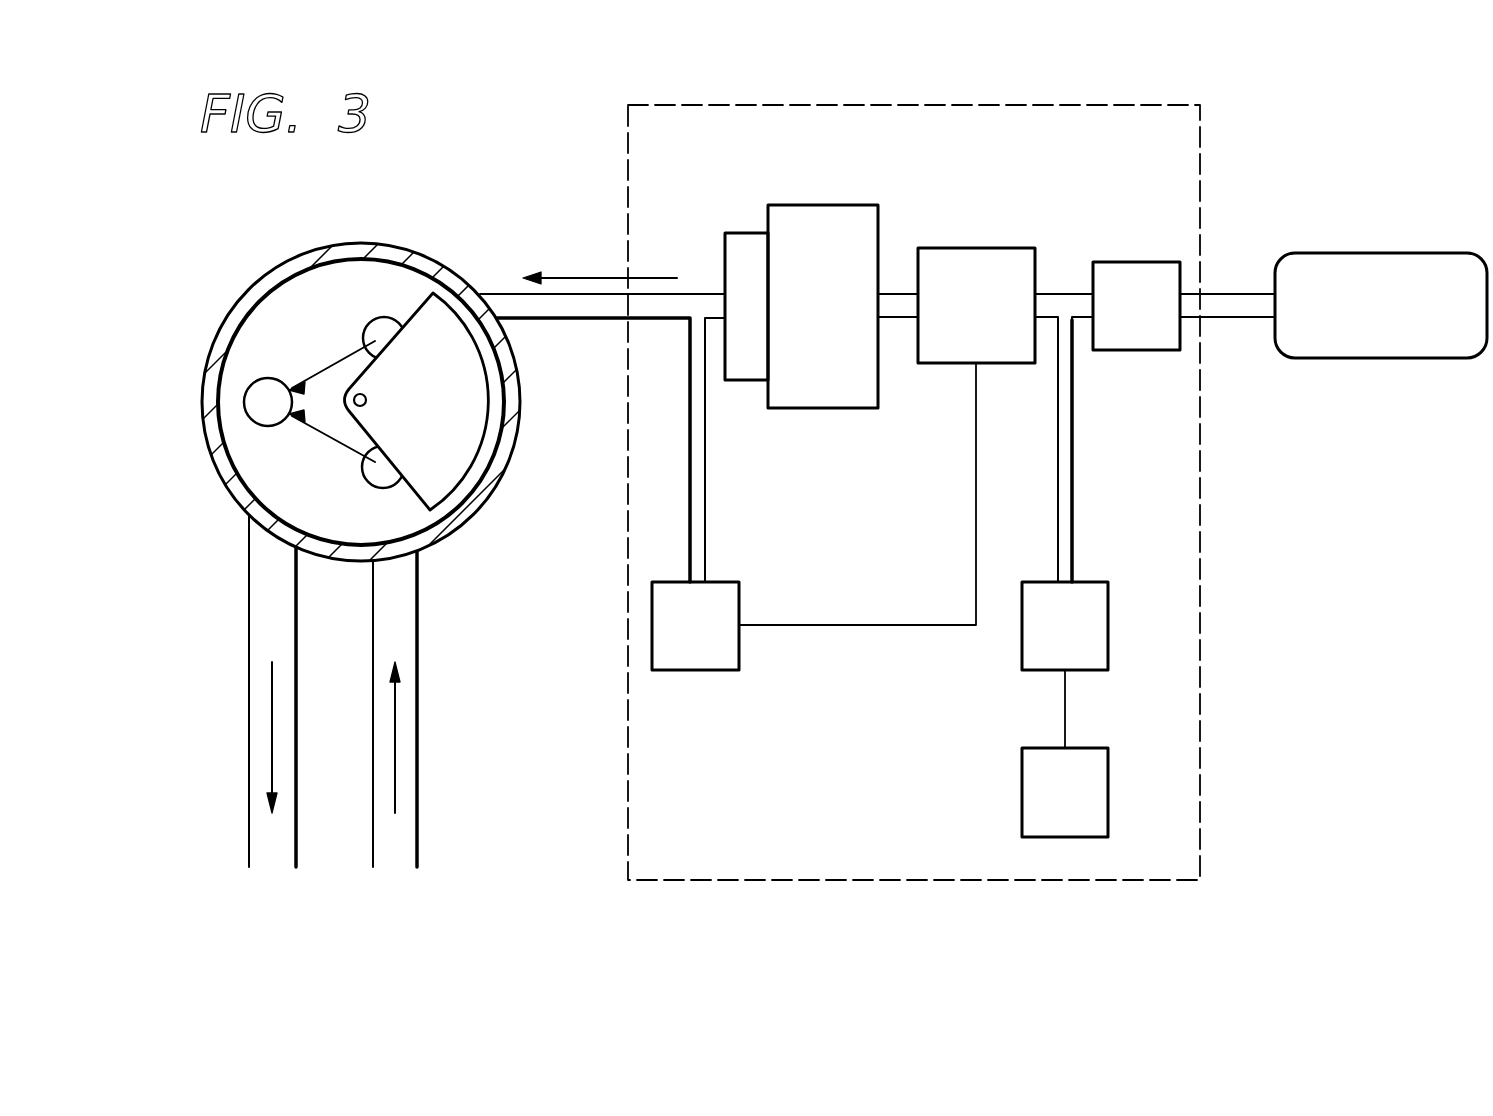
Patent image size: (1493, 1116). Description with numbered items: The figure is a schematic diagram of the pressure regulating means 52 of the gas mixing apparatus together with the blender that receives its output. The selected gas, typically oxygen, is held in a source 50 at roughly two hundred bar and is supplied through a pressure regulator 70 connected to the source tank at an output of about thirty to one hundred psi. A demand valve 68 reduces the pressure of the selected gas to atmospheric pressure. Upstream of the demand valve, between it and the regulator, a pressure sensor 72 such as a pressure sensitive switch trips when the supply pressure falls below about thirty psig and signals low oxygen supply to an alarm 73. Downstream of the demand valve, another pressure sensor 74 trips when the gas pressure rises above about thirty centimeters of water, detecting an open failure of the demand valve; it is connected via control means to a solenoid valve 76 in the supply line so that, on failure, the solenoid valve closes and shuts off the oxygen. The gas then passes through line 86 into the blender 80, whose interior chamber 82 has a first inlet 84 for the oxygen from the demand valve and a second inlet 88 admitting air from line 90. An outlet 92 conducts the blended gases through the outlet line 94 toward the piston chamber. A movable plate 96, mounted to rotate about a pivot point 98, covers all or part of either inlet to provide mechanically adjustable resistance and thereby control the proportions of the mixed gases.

The source 50 is at (1378, 268).
The pressure regulating means 52 is at (1242, 206).
The demand valve 68 is at (825, 228).
The pressure regulator 70 is at (1140, 278).
The pressure sensor 72 is at (1097, 632).
The alarm 73 is at (1085, 785).
The pressure sensor 74 is at (695, 645).
The solenoid valve 76 is at (976, 278).
The blender 80 is at (416, 249).
The interior chamber 82 is at (288, 300).
The first inlet 84 is at (383, 318).
The line 86 is at (553, 307).
The second inlet 88 is at (393, 485).
The line 90 is at (418, 720).
The outlet 92 is at (244, 403).
The outlet line 94 is at (249, 633).
The movable plate 96 is at (452, 452).
The pivot point 98 is at (368, 398).